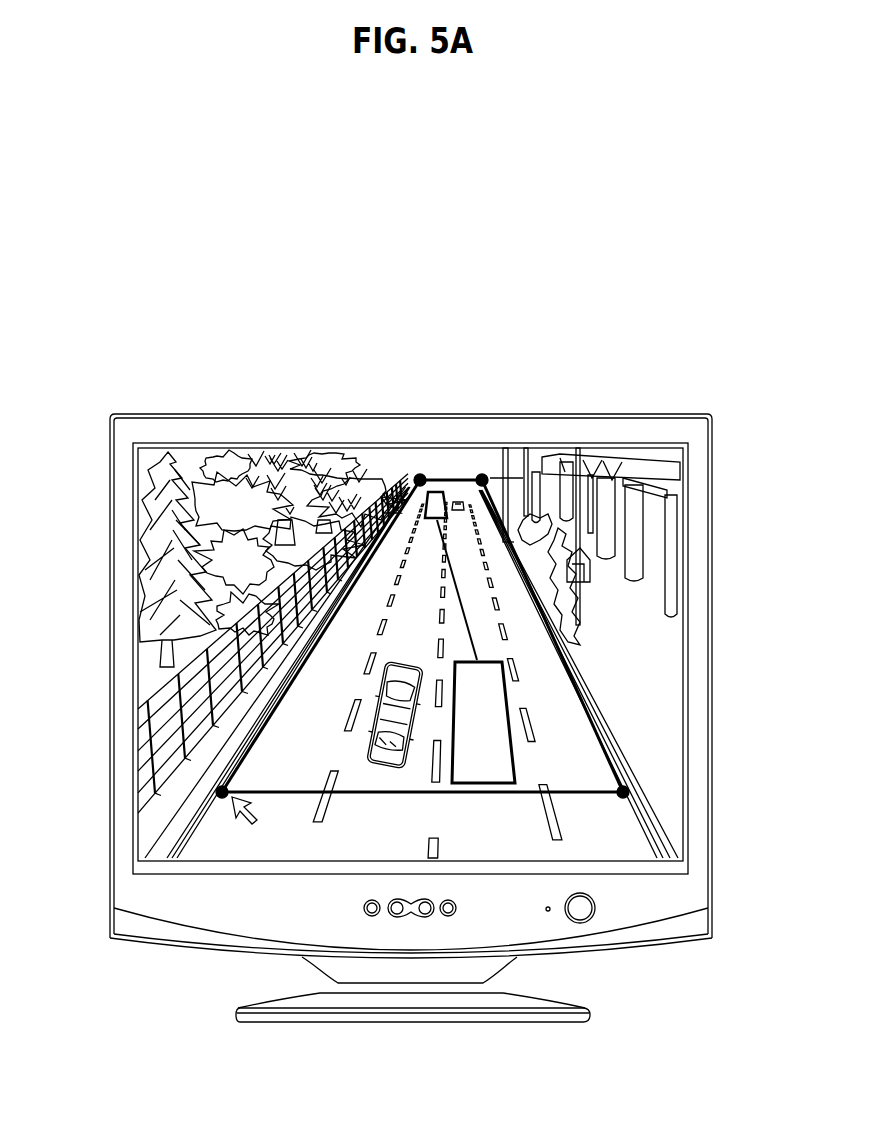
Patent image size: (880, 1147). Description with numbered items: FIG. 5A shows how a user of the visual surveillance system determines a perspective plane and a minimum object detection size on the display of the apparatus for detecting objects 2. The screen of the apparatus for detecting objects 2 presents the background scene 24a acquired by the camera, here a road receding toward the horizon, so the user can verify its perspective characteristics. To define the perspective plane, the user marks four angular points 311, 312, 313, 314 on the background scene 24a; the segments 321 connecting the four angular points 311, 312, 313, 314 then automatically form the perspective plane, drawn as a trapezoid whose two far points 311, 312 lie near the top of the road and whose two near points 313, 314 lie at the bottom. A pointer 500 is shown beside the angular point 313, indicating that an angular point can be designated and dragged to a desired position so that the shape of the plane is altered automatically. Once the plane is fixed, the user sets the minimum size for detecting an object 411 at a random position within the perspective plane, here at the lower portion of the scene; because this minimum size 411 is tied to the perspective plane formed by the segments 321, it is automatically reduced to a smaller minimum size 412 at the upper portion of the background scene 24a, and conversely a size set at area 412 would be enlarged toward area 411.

The apparatus for detecting objects 2 is at (712, 445).
The background scene 24a is at (553, 447).
The angular point 311 is at (420, 474).
The angular point 312 is at (482, 474).
The angular point 313 is at (216, 792).
The angular point 314 is at (629, 792).
The segments 321 is at (322, 633).
The minimum size for detecting an object 411 is at (505, 715).
The smaller minimum size 412 is at (447, 501).
The cursor 500 is at (245, 815).